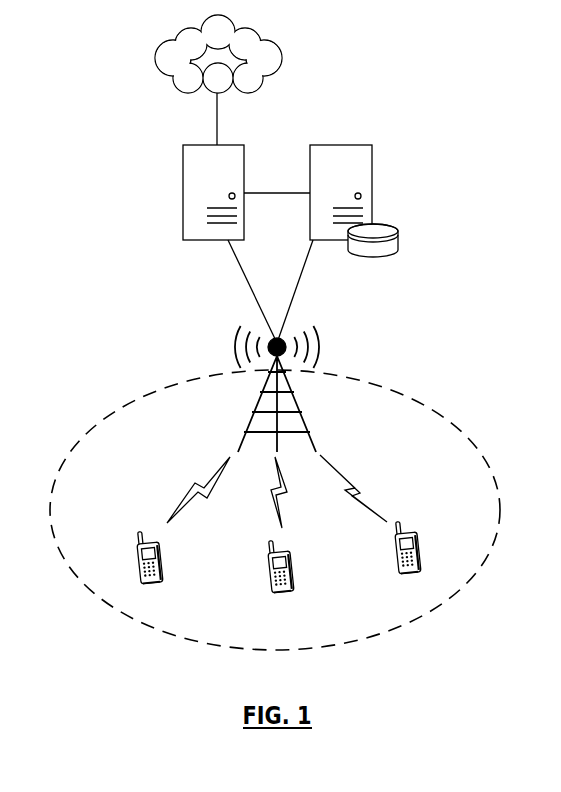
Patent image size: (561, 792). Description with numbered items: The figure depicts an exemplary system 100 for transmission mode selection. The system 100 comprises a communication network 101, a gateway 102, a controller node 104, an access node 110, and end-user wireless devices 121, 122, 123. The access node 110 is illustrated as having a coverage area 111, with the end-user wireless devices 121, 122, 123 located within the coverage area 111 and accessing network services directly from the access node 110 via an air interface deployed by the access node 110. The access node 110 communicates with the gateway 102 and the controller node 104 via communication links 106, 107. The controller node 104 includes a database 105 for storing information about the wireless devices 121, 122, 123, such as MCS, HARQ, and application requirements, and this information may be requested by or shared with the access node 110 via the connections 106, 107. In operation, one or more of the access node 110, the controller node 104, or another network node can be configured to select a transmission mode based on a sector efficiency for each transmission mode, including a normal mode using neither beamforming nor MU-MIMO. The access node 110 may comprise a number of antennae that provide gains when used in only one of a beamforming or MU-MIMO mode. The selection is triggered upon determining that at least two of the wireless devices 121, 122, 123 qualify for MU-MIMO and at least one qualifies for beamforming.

The system 100 is at (329, 79).
The communication network 101 is at (237, 68).
The gateway 102 is at (183, 167).
The controller node 104 is at (372, 160).
The database 105 is at (397, 232).
The communication link 106 is at (242, 275).
The communication link 107 is at (303, 275).
The access node 110 is at (252, 432).
The coverage area 111 is at (121, 608).
The end-user wireless device 121 is at (155, 587).
The end-user wireless device 122 is at (288, 596).
The end-user wireless device 123 is at (420, 577).